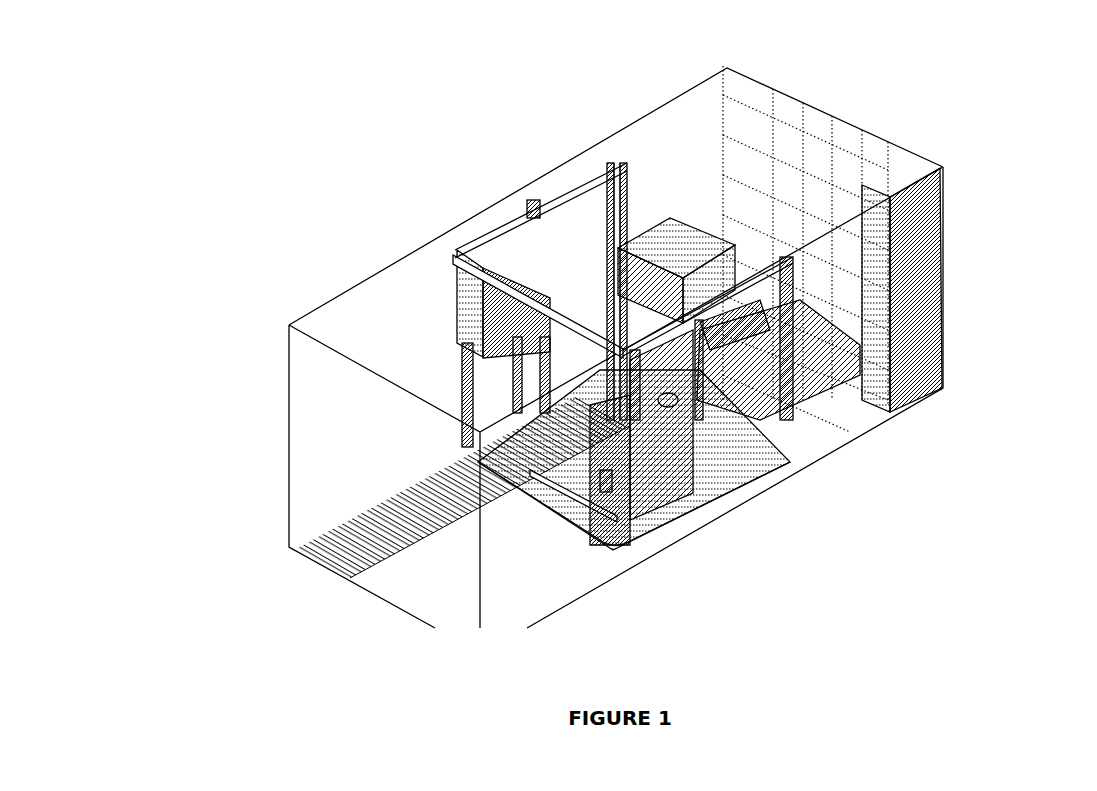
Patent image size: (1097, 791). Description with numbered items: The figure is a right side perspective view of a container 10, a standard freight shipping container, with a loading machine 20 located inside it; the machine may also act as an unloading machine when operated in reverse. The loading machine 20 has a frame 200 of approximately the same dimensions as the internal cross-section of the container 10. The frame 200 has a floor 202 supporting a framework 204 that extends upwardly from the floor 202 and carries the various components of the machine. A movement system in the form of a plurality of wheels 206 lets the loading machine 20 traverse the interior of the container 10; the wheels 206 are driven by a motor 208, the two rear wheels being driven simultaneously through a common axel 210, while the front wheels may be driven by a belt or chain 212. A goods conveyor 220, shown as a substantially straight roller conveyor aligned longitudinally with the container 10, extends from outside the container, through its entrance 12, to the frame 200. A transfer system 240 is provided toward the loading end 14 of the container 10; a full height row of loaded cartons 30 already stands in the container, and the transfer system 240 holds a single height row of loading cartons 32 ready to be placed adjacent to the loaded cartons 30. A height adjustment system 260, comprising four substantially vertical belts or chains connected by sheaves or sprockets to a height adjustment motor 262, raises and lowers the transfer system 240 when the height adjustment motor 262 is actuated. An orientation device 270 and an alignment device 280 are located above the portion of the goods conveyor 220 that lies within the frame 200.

The container 10 is at (338, 293).
The entrance 12 is at (289, 388).
The loading end 14 is at (945, 275).
The loading machine 20 is at (398, 146).
The loaded cartons 30 is at (883, 150).
The loading cartons 32 is at (667, 232).
The frame 200 is at (795, 425).
The floor 202 is at (685, 517).
The framework 204 is at (705, 497).
The wheels 206 is at (617, 520).
The motor 208 is at (610, 492).
The common axel 210 is at (590, 502).
The belt or chain 212 is at (652, 497).
The goods conveyor 220 is at (338, 527).
The transfer system 240 is at (817, 375).
The height adjustment system 260 is at (657, 322).
The height adjustment motor 262 is at (623, 192).
The orientation device 270 is at (668, 403).
The alignment device 280 is at (738, 336).